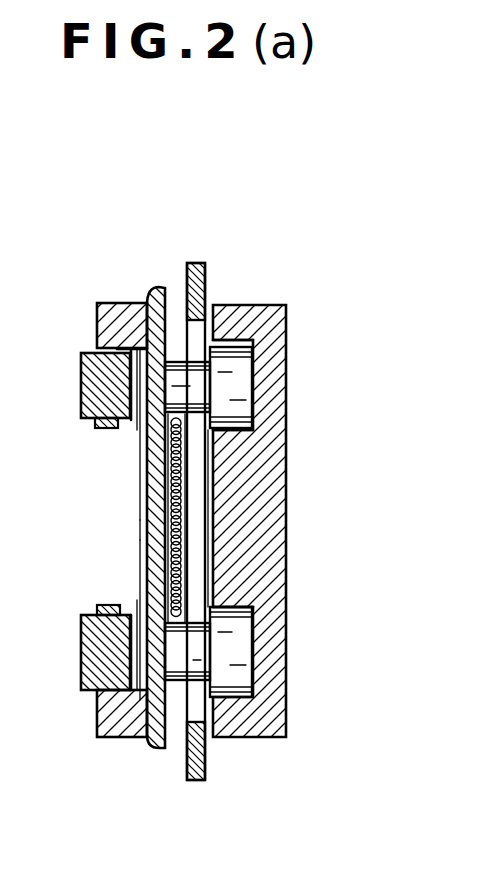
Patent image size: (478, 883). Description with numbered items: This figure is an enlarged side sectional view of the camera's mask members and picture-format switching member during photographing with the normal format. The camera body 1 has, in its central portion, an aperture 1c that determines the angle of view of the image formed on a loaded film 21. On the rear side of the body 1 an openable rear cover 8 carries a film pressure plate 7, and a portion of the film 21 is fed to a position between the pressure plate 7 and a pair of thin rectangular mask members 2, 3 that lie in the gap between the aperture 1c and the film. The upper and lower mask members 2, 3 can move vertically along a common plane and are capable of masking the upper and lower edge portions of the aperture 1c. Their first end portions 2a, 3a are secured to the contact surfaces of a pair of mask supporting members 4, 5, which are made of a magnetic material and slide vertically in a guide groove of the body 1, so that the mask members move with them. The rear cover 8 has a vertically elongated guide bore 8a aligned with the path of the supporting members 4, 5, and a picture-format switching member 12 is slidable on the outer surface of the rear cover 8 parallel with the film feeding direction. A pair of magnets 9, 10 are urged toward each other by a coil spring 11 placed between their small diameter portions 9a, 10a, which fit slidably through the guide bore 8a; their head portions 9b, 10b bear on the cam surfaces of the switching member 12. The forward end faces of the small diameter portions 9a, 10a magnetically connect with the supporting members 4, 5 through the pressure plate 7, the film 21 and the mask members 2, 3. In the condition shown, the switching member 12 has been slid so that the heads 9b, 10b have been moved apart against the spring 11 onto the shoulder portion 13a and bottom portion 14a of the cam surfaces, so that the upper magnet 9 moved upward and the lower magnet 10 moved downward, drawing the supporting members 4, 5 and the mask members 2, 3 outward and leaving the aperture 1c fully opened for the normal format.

The body 1 is at (99, 327).
The aperture 1c is at (125, 525).
The mask member 2 is at (129, 427).
The first end portion 2a is at (84, 407).
The mask member 3 is at (133, 603).
The first end portion 3a is at (136, 643).
The mask supporting member 4 is at (81, 383).
The mask supporting member 5 is at (83, 673).
The film pressure plate 7 is at (150, 297).
The rear cover 8 is at (206, 281).
The guide bore 8a is at (218, 333).
The magnet 9 is at (176, 342).
The small diameter portion 9a is at (193, 383).
The head portion 9b is at (232, 374).
The magnet 10 is at (177, 692).
The small diameter portion 10a is at (193, 662).
The head portion 10b is at (233, 648).
The coil spring 11 is at (181, 520).
The picture-format switching member 12 is at (253, 357).
The shoulder portion 13a is at (233, 432).
The bottom portion 14a is at (233, 598).
The film 21 is at (124, 358).